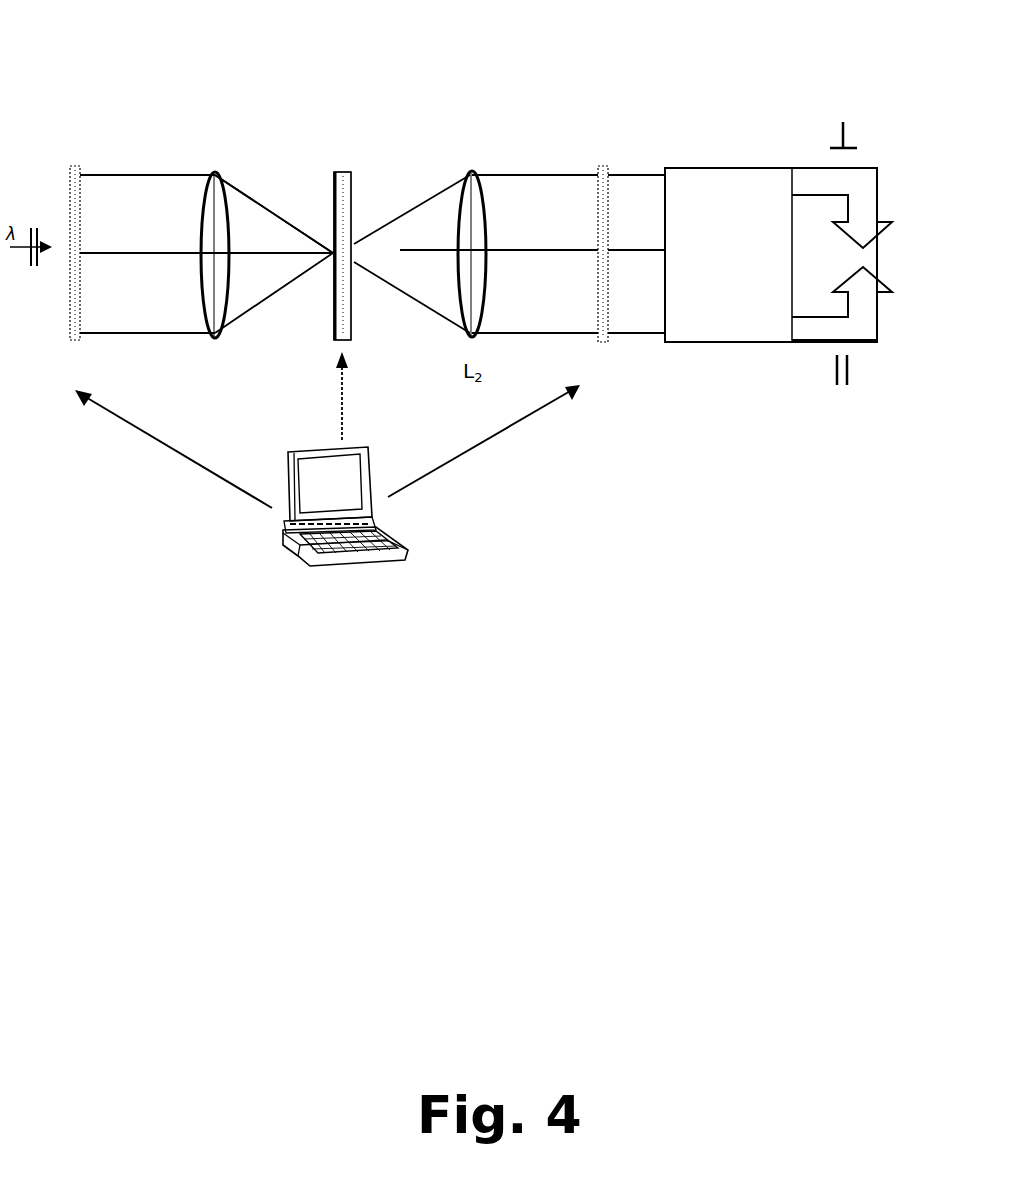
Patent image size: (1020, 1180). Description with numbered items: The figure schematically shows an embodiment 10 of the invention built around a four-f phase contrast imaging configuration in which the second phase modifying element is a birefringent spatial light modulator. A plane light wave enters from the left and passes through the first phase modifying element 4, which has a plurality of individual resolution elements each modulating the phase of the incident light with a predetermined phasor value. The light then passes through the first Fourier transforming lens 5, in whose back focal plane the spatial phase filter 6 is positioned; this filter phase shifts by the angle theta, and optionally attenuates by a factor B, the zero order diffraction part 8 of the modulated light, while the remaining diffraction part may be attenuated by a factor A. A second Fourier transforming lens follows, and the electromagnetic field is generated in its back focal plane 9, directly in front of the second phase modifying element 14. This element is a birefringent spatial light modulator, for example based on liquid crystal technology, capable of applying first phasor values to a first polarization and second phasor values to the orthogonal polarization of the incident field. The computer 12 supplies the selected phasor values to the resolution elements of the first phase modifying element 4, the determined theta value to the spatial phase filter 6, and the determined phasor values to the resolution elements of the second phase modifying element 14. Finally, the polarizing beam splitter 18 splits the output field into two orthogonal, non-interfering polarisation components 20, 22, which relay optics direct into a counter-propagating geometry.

The first phase modifying element 4 is at (74, 120).
The first lens L1 5 is at (215, 162).
The spatial phase filter 6 is at (353, 328).
The zero order diffraction part 8 is at (278, 232).
The back focal plane of the lens L2 9 is at (604, 122).
The embodiment 10 is at (351, 95).
The computer 12 is at (346, 596).
The second phase modifying element 14 is at (606, 313).
The beam splitter 18 is at (724, 334).
The polarisation component 20 is at (806, 188).
The polarisation component 22 is at (802, 333).